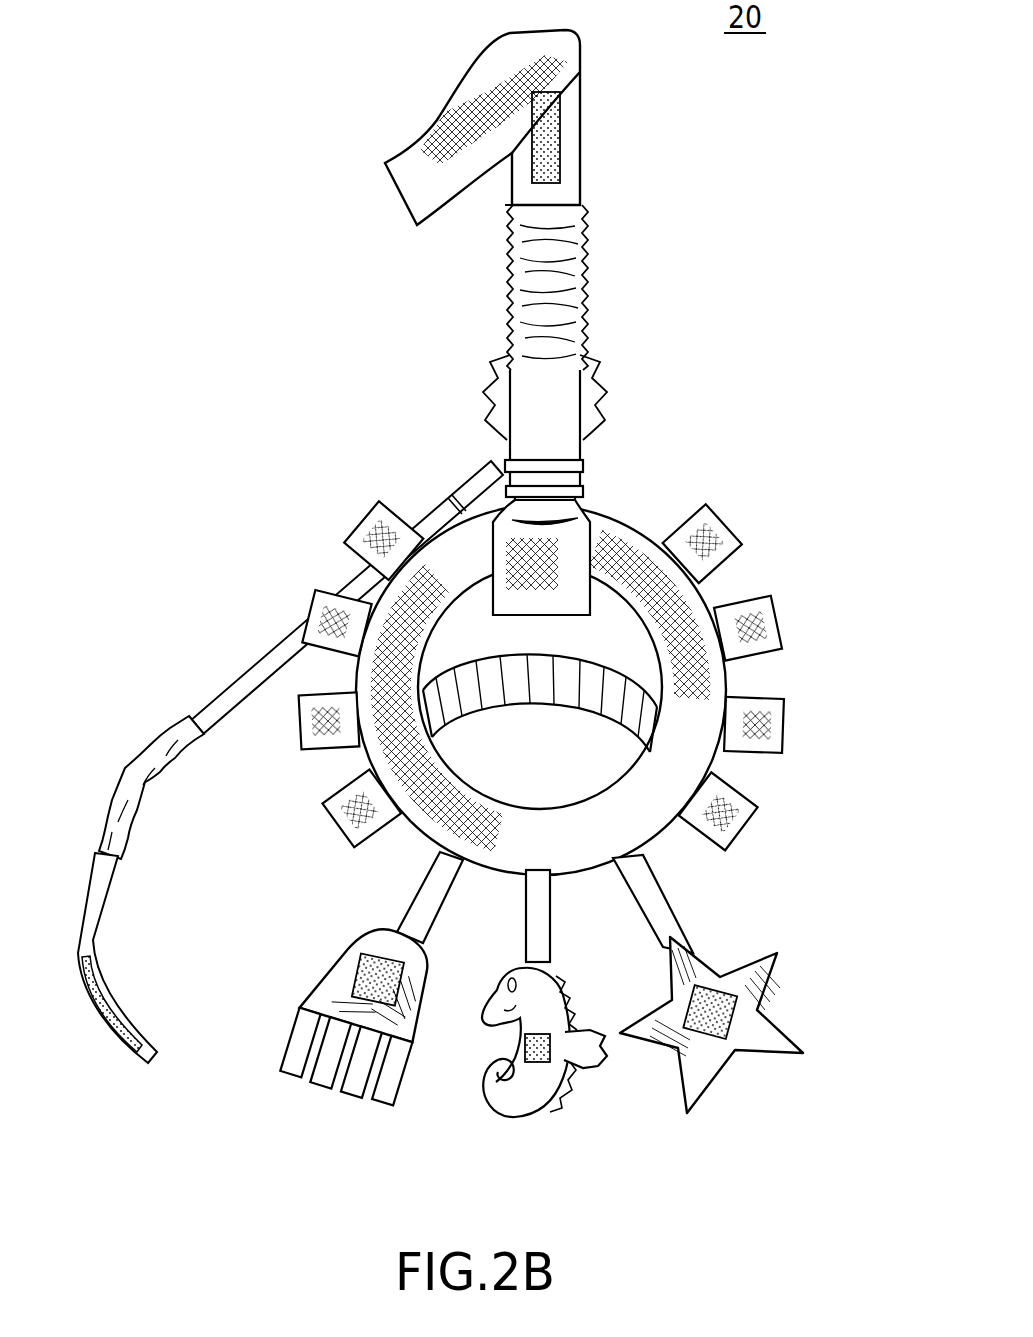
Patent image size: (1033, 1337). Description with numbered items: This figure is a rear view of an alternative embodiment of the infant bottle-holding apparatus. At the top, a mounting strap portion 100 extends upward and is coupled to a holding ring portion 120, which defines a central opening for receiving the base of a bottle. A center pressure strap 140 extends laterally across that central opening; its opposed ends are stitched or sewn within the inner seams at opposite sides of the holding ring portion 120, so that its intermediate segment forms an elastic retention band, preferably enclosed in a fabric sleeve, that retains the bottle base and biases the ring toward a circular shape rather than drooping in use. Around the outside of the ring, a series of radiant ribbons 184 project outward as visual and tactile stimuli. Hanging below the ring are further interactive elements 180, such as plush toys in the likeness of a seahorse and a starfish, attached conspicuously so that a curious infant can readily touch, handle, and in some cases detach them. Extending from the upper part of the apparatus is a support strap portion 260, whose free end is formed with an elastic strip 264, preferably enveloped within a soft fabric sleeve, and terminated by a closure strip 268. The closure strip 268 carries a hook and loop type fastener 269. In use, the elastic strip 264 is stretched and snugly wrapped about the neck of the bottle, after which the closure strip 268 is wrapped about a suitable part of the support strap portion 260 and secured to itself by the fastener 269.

The mounting strap portion 100 is at (582, 150).
The holding ring portion 120 is at (623, 545).
The center pressure strap 140 is at (548, 714).
The radiant ribbons 184 is at (745, 752).
The interactive elements 180 is at (327, 1122).
The support strap portion 260 is at (262, 666).
The elastic strip 264 is at (142, 770).
The closure strip 268 is at (103, 893).
The hook and loop type fastener 269 is at (117, 1013).